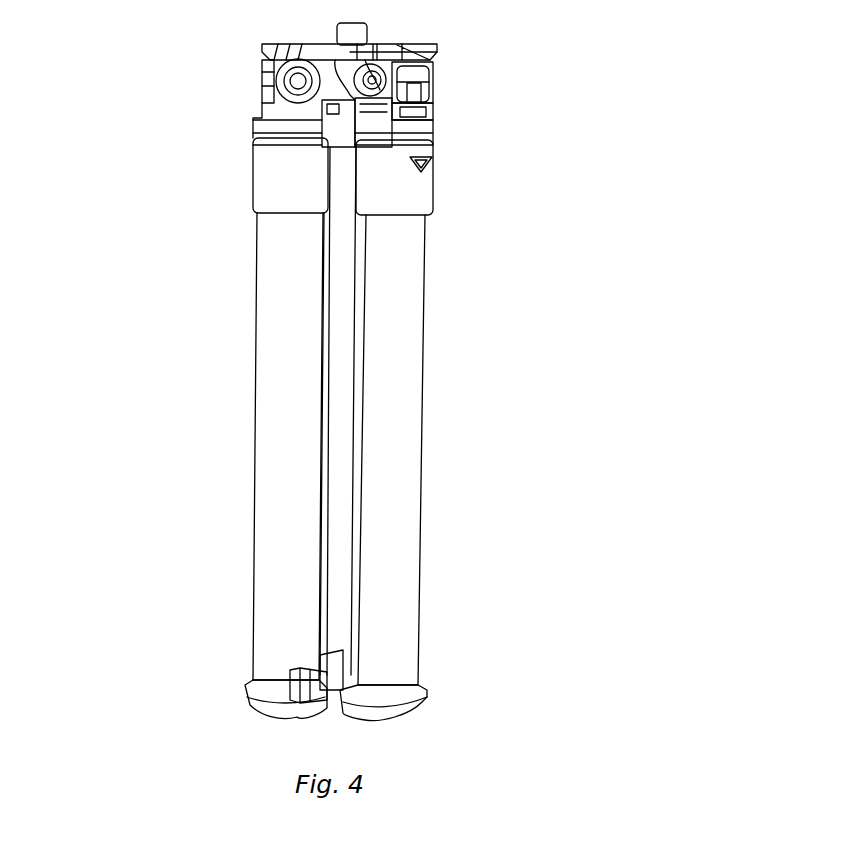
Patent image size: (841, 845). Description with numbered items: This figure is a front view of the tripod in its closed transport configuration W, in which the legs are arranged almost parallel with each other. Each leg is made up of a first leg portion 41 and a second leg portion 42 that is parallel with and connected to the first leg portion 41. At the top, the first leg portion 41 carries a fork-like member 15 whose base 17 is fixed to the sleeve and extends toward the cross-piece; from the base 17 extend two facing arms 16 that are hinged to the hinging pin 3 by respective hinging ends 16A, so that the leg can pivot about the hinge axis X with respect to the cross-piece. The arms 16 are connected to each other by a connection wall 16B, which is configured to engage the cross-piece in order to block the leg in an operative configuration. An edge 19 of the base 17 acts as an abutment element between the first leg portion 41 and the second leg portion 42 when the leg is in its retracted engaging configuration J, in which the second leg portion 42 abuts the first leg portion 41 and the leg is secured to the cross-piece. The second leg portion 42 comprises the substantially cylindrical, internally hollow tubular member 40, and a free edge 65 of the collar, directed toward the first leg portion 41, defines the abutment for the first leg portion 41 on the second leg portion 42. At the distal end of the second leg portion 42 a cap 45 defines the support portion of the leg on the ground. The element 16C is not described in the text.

The hinging pin 3 is at (263, 103).
The fork-like member 15 is at (445, 128).
The arms 16 is at (283, 100).
The hinging ends 16A is at (268, 79).
The connection wall 16B is at (292, 91).
The outlet connection 16C is at (325, 178).
The base 17 is at (283, 118).
The edge 19 is at (433, 130).
The tubular member 40 is at (280, 457).
The first leg portion 41 is at (135, 152).
The second leg portion 42 is at (217, 393).
The cap 45 is at (288, 692).
The free edge 65 is at (413, 145).
The retracted engaging configuration J is at (465, 172).
The hinge axis X is at (407, 82).
The closed transport configuration W is at (598, 334).